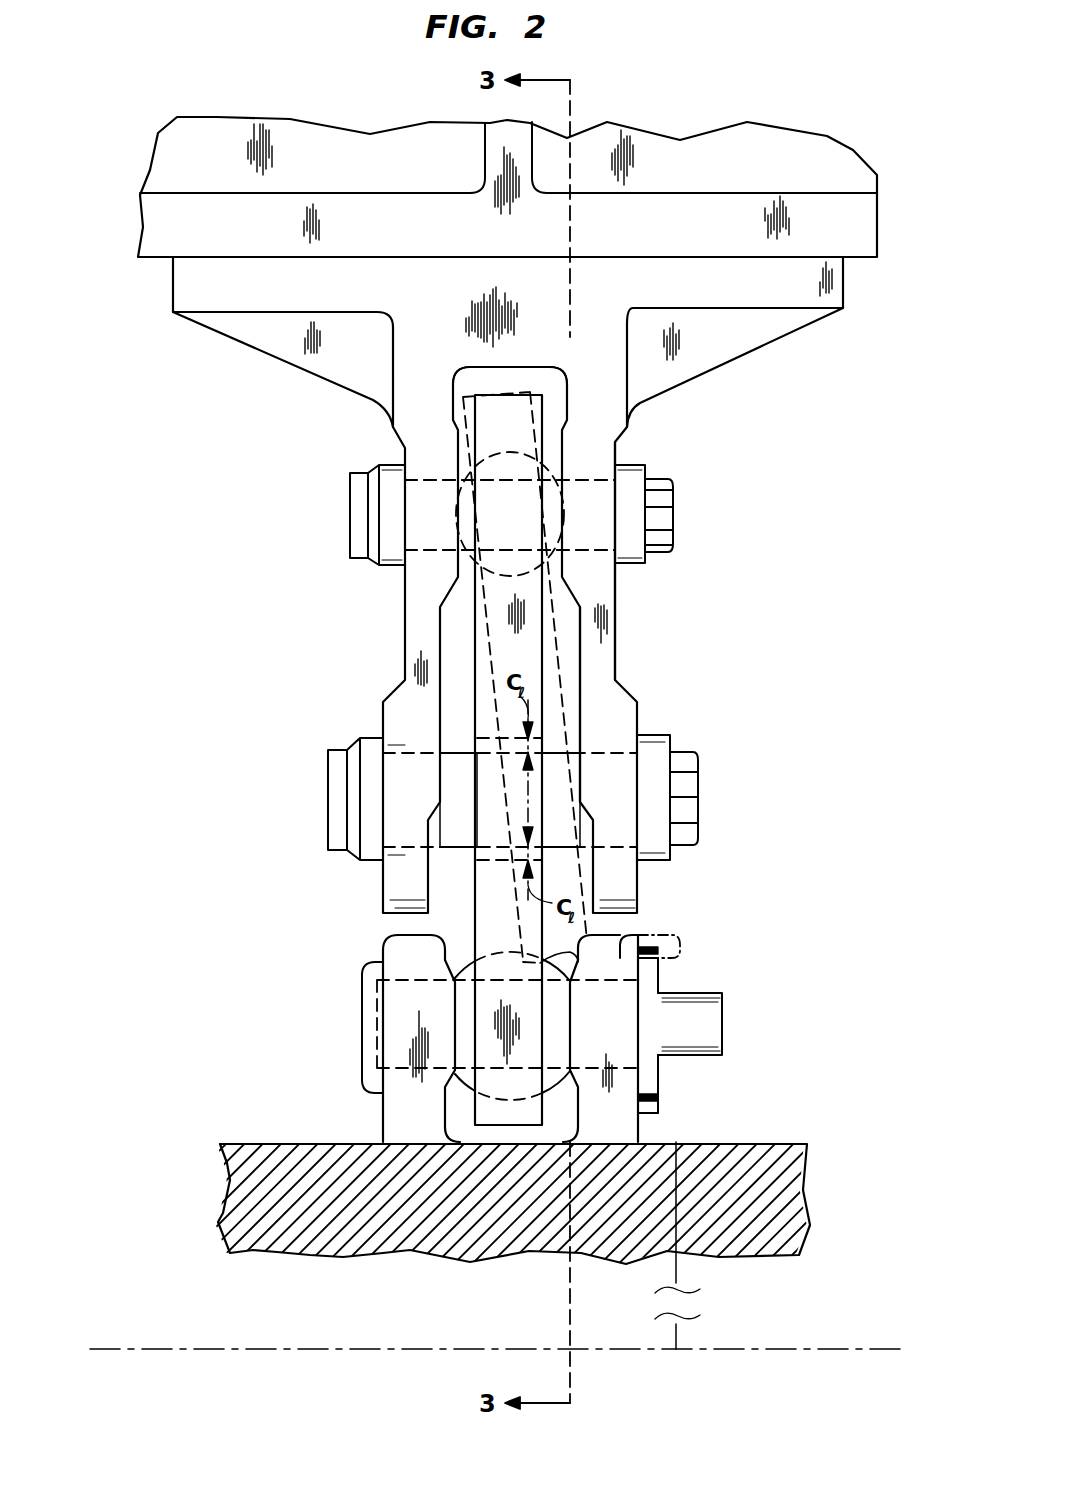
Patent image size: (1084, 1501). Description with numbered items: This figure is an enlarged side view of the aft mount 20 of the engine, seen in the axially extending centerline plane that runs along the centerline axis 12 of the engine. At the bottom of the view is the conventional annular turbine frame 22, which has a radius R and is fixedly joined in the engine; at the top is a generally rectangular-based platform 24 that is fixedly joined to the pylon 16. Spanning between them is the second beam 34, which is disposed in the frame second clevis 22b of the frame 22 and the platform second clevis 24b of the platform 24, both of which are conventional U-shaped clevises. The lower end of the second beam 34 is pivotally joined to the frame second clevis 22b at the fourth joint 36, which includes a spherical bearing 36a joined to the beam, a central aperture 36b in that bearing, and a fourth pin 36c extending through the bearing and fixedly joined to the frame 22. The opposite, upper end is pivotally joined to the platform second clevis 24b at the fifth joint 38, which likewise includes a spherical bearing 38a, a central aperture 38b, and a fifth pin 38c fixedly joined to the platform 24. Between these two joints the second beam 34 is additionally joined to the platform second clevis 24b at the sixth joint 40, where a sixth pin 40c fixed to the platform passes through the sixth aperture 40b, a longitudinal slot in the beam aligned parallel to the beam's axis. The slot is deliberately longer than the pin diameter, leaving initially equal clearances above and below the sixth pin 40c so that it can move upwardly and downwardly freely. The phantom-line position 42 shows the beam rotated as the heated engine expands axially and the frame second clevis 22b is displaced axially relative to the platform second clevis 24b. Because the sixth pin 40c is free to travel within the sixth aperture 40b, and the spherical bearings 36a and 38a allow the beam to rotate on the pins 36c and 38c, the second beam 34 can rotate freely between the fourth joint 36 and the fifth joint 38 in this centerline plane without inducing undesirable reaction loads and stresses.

The centerline axis 12 is at (805, 1349).
The pylon 16 is at (857, 222).
The aft mount 20 is at (296, 683).
The turbine frame 22 is at (757, 1142).
The frame second clevis 22b is at (660, 1113).
The platform 24 is at (840, 287).
The platform second clevis 24b is at (615, 626).
The second beam 34 is at (477, 645).
The fourth joint 36 is at (340, 996).
The spherical bearing 36a is at (455, 1085).
The central aperture 36b is at (652, 990).
The fourth pin 36c is at (602, 1025).
The fifth joint 38 is at (432, 567).
The spherical bearing 38a is at (560, 460).
The central aperture 38b is at (510, 477).
The fifth pin 38c is at (590, 533).
The sixth joint 40 is at (370, 865).
The sixth aperture 40b is at (477, 743).
The sixth pin 40c is at (613, 747).
The rotated position 42 is at (567, 678).
The radius R is at (695, 1142).